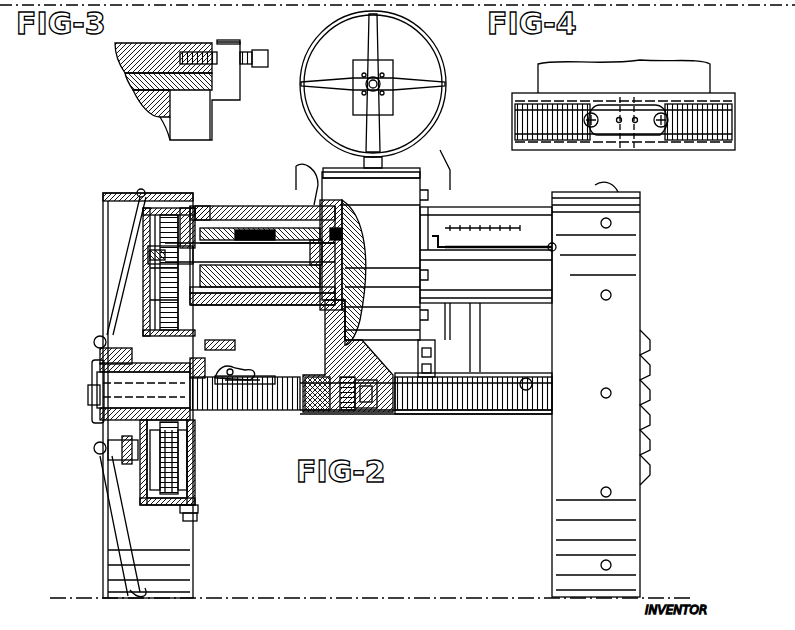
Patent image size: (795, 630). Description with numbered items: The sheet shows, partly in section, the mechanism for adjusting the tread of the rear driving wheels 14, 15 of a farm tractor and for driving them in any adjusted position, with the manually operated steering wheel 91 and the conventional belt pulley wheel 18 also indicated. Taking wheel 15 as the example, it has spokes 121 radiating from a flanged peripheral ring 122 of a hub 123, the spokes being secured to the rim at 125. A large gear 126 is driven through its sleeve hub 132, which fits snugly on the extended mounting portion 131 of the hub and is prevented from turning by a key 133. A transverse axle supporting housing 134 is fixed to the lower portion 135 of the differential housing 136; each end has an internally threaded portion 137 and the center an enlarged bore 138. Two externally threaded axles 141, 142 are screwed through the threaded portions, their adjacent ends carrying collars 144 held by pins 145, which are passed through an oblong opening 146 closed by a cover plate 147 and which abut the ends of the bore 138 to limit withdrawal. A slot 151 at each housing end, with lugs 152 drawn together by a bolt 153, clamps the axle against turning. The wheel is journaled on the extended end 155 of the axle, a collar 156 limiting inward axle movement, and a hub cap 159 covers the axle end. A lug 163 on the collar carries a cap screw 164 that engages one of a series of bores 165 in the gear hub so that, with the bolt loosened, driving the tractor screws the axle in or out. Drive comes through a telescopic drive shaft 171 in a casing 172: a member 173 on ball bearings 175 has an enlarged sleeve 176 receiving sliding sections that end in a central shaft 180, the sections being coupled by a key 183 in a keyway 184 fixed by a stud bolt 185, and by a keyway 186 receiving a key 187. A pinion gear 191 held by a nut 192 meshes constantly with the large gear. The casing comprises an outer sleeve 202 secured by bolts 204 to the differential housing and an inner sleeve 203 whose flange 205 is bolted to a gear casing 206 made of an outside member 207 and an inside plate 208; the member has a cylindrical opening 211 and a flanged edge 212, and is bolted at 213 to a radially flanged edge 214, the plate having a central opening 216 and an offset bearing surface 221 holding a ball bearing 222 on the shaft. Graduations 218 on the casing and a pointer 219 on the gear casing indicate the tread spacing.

In FIG. 2, the rear driving wheel 14 is at (552, 520).
In FIG. 2, the rear driving wheel 15 is at (192, 536).
In FIG. 2, the belt pulley wheel 18 is at (488, 334).
In FIG. 2, the steering wheel 91 is at (436, 116).
In FIG. 2, the spokes 121 is at (110, 494).
In FIG. 2, the flanged peripheral ring 122 is at (126, 466).
In FIG. 2, the hub 123 is at (98, 412).
In FIG. 2, the spoke-to-rim connection 125 is at (140, 600).
In FIG. 3, the large gear 126 is at (124, 60).
In FIG. 2, the large gear 126 is at (193, 486).
In FIG. 3, the extended mounting portion 131 is at (150, 110).
In FIG. 2, the extended mounting portion 131 is at (180, 455).
In FIG. 2, the sleeve hub 132 is at (196, 425).
In FIG. 3, the key 133 is at (140, 85).
In FIG. 2, the key 133 is at (200, 306).
In FIG. 4, the axle supporting housing 134 is at (712, 95).
In FIG. 2, the axle supporting housing 134 is at (434, 419).
In FIG. 2, the lower portion of differential housing 135 is at (382, 340).
In FIG. 2, the differential housing 136 is at (424, 260).
In FIG. 2, the internally threaded portion 137 is at (262, 416).
In FIG. 2, the enlarged bore 138 is at (332, 416).
In FIG. 4, the axle 141 is at (518, 128).
In FIG. 2, the axle 141 is at (312, 416).
In FIG. 4, the axle 142 is at (734, 112).
In FIG. 2, the axle 142 is at (402, 398).
In FIG. 4, the collar 144 is at (626, 142).
In FIG. 2, the collar 144 is at (368, 412).
In FIG. 4, the pin 145 is at (624, 110).
In FIG. 2, the pin 145 is at (410, 342).
In FIG. 4, the oblong opening 146 is at (660, 112).
In FIG. 4, the cover plate 147 is at (592, 112).
In FIG. 2, the slot 151 is at (257, 370).
In FIG. 2, the lugs 152 is at (258, 368).
In FIG. 2, the bolt 153 is at (236, 366).
In FIG. 2, the extended end of axle 155 is at (100, 392).
In FIG. 3, the collar 156 is at (198, 122).
In FIG. 2, the collar 156 is at (236, 344).
In FIG. 2, the hub cap 159 is at (93, 372).
In FIG. 3, the lug 163 is at (232, 42).
In FIG. 2, the lug 163 is at (208, 362).
In FIG. 3, the cap screw 164 is at (258, 52).
In FIG. 3, the bores 165 is at (185, 50).
In FIG. 2, the telescopic drive shaft 171 is at (288, 228).
In FIG. 2, the casing 172 is at (242, 218).
In FIG. 2, the shaft member 173 is at (328, 253).
In FIG. 2, the ball bearings 175 is at (342, 214).
In FIG. 2, the enlarged bore or sleeve 176 is at (342, 232).
In FIG. 2, the central shaft section 180 is at (350, 315).
In FIG. 2, the key 183 is at (267, 254).
In FIG. 2, the keyway 184 is at (264, 232).
In FIG. 2, the stud bolt 185 is at (253, 230).
In FIG. 2, the keyway 186 is at (250, 254).
In FIG. 2, the key 187 is at (212, 208).
In FIG. 2, the pinion gear 191 is at (150, 270).
In FIG. 2, the nut 192 is at (148, 258).
In FIG. 2, the outer sleeve 202 is at (514, 208).
In FIG. 2, the inner sleeve 203 is at (240, 304).
In FIG. 2, the bolts 204 is at (312, 178).
In FIG. 2, the peripheral flange 205 is at (185, 210).
In FIG. 2, the gear casing 206 is at (160, 222).
In FIG. 2, the outside casing member 207 is at (148, 240).
In FIG. 2, the inside plate 208 is at (193, 468).
In FIG. 2, the cylindrical opening 211 is at (165, 498).
In FIG. 2, the flanged edge 212 is at (186, 520).
In FIG. 2, the bolts 213 is at (200, 512).
In FIG. 2, the radially flanged edge 214 is at (197, 520).
In FIG. 2, the central opening 216 is at (182, 440).
In FIG. 2, the graduations 218 is at (496, 207).
In FIG. 2, the pointer 219 is at (435, 252).
In FIG. 2, the offset bearing surface 221 is at (165, 290).
In FIG. 2, the ball bearing 222 is at (156, 210).